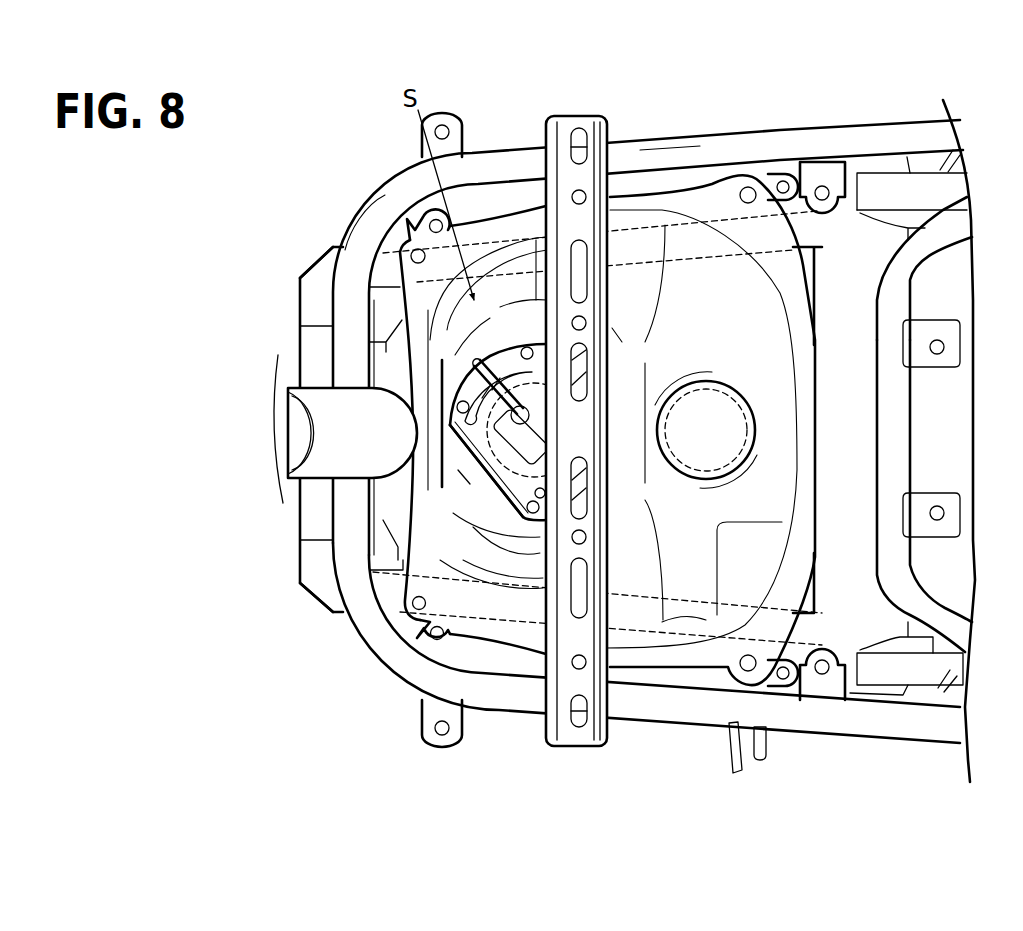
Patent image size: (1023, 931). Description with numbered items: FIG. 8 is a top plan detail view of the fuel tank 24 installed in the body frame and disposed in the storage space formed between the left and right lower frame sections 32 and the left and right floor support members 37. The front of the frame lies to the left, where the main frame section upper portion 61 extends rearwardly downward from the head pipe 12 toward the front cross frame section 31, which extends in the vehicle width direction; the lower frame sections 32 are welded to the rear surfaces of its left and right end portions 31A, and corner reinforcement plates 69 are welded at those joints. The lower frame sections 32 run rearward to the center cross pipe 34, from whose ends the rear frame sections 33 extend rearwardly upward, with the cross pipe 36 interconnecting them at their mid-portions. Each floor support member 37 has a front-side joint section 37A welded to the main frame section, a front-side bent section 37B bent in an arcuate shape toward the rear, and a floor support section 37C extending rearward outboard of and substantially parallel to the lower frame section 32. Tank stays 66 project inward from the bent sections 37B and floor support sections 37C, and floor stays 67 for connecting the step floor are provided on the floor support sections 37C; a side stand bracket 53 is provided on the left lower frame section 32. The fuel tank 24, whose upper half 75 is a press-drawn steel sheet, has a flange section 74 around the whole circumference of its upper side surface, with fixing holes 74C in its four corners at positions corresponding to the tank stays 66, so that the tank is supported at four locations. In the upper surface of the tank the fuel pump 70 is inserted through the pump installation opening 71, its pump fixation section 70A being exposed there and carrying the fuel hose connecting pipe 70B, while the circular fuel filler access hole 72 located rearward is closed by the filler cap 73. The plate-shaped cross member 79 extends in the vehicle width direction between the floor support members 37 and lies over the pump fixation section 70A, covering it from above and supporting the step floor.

The head pipe 12 is at (290, 385).
The fuel tank 24 is at (733, 285).
The front cross frame section 31 is at (298, 303).
The end portions of the front cross frame section 31A is at (320, 270).
The lower frame sections 32 is at (533, 237).
The rear frame sections 33 is at (958, 163).
The center cross pipe 34 is at (862, 488).
The cross pipe 36 is at (913, 447).
The floor support members 37 is at (637, 143).
The front-side joint sections 37A is at (334, 337).
The front-side bent sections 37B is at (386, 204).
The floor support sections 37C is at (667, 143).
The side stand bracket 53 is at (738, 765).
The main frame section upper portion 61 is at (300, 477).
The tank stays 66 is at (415, 226).
The floor stays 67 is at (442, 120).
The corner reinforcement plates 69 is at (306, 659).
The fuel pump 70 is at (499, 494).
The pump fixation section 70A is at (482, 444).
The fuel hose connecting pipe 70B is at (476, 363).
The pump installation opening 71 is at (507, 462).
The fuel filler access hole 72 is at (757, 421).
The filler cap 73 is at (755, 407).
The flange section 74 is at (470, 295).
The fixing holes 74C is at (412, 254).
The upper half 75 is at (697, 287).
The cross member 79 is at (590, 137).